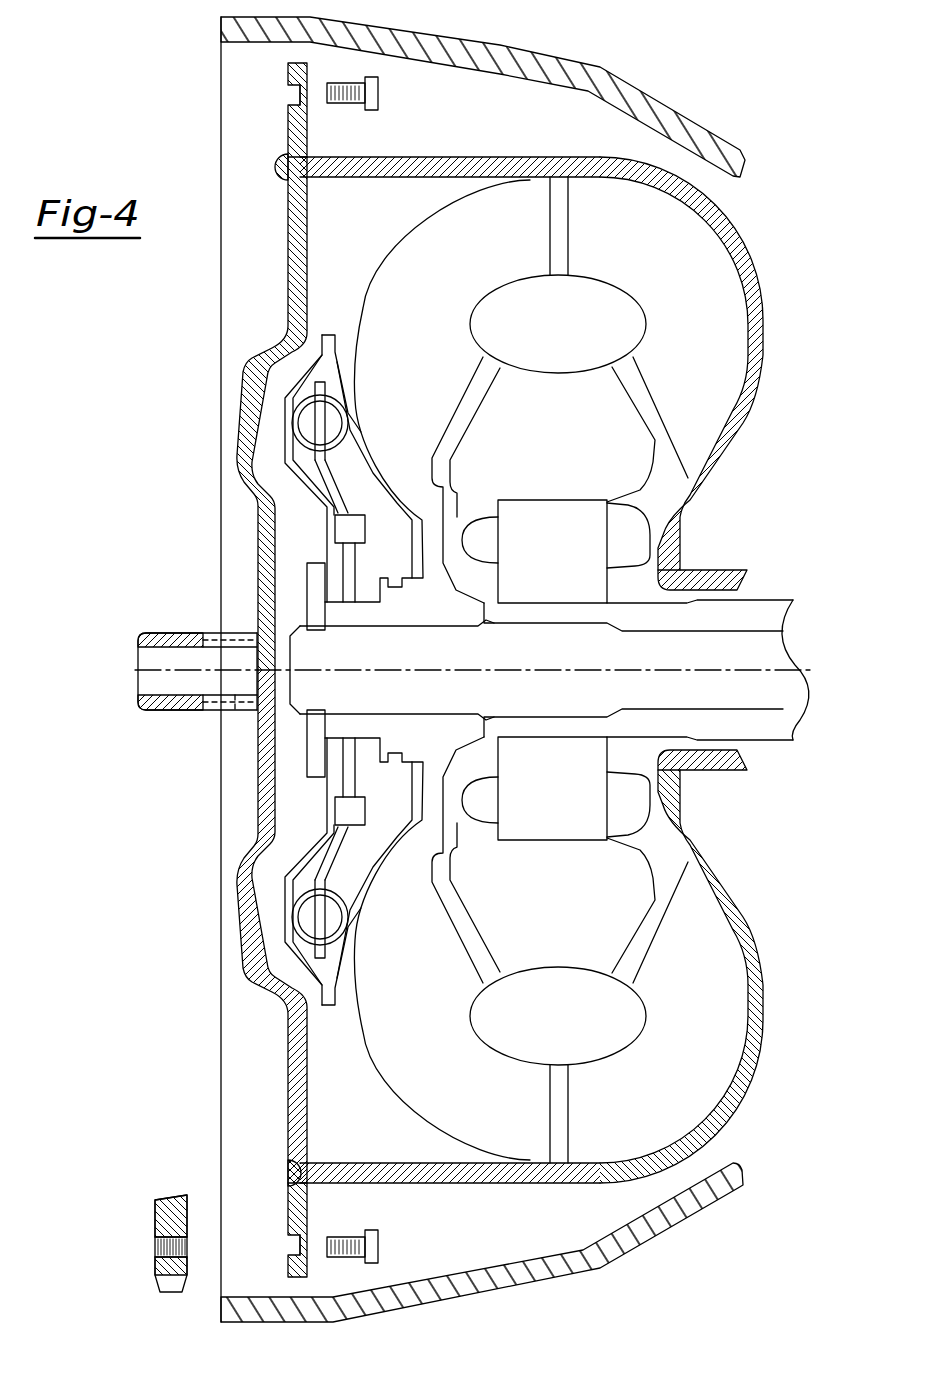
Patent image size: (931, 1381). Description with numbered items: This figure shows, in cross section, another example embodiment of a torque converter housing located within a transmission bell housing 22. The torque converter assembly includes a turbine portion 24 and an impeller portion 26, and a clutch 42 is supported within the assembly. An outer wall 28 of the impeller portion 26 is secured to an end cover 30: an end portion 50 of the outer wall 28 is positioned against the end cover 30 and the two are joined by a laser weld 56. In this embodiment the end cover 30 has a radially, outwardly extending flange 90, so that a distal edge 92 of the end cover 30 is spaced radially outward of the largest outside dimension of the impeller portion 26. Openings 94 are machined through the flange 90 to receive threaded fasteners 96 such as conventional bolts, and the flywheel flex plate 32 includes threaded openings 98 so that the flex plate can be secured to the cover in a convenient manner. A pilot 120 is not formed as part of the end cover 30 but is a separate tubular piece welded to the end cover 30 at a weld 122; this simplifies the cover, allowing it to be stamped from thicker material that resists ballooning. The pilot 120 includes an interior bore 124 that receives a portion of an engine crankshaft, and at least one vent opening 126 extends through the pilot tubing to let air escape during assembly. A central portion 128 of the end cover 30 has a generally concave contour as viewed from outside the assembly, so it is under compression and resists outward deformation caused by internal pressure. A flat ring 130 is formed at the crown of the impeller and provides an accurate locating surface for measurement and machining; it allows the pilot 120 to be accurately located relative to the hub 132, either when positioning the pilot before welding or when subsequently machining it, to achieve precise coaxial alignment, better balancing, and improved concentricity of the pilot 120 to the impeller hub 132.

The transmission bell housing 22 is at (672, 112).
The turbine portion 24 is at (519, 216).
The impeller portion 26 is at (668, 250).
The outer wall 28 is at (450, 642).
The end cover 30 is at (232, 662).
The flywheel flex plate 32 is at (138, 1220).
The clutch 42 is at (285, 912).
The end portion 50 is at (335, 180).
The laser weld 56 is at (284, 168).
The flange 90 is at (308, 1205).
The distal edge 92 is at (288, 66).
The openings 94 is at (292, 96).
The threaded fasteners 96 is at (378, 95).
The threaded openings 98 is at (157, 1248).
The pilot 120 is at (147, 669).
The weld 122 is at (253, 628).
The interior bore 124 is at (155, 681).
The vent opening 126 is at (232, 712).
The central portion 128 is at (257, 779).
The flat ring 130 is at (717, 670).
The hub 132 is at (715, 570).